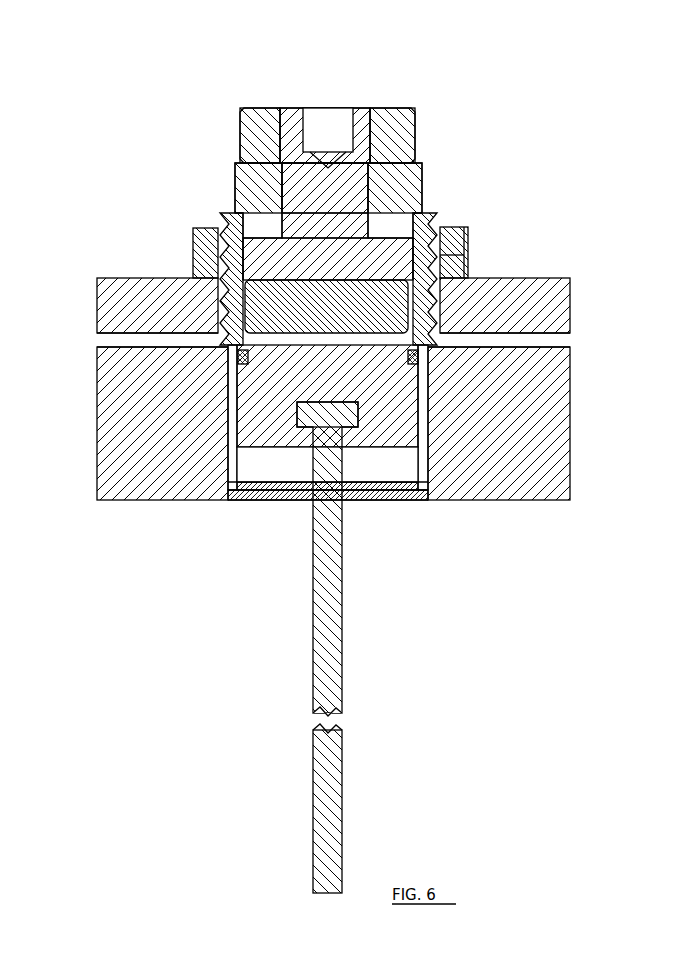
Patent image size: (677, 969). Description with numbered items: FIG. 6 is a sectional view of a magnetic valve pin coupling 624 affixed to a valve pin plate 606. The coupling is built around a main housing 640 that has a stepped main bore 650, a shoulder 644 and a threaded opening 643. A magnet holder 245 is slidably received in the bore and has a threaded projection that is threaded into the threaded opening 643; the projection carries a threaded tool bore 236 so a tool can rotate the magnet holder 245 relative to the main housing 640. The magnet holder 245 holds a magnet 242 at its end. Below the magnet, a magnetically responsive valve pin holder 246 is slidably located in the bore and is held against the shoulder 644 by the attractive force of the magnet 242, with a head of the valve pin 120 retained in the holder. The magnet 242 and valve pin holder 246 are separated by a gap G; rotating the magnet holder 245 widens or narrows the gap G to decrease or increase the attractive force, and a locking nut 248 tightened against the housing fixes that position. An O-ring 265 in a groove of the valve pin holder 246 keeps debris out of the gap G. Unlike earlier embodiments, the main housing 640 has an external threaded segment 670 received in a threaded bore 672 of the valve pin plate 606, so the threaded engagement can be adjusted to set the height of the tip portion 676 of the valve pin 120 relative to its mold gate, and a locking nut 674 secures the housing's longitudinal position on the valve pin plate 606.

The valve pin 120 is at (348, 783).
The threaded tool bore 236 is at (327, 108).
The magnet 242 is at (430, 292).
The magnet holder 245 is at (470, 258).
The valve pin holder 246 is at (430, 397).
The locking nut 248 is at (417, 110).
The seal ring 265 is at (240, 372).
The valve pin plate 606 is at (555, 505).
The magnetic valve pin coupling 624 is at (528, 96).
The main housing 640 is at (429, 200).
The threaded opening 643 is at (293, 188).
The shoulder 644 is at (432, 360).
The stepped main bore 650 is at (437, 237).
The threaded segment 670 is at (216, 292).
The threaded bore 672 is at (216, 266).
The locking nut 674 is at (470, 236).
The tip portion 676 is at (312, 888).
The gap G is at (83, 316).